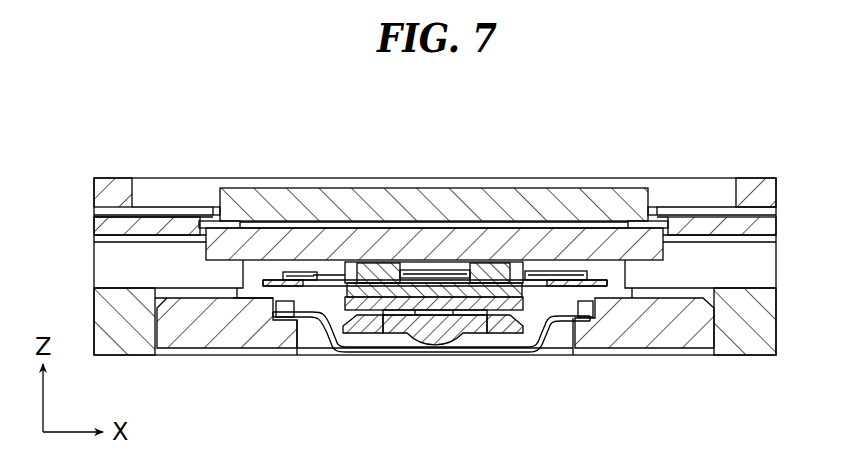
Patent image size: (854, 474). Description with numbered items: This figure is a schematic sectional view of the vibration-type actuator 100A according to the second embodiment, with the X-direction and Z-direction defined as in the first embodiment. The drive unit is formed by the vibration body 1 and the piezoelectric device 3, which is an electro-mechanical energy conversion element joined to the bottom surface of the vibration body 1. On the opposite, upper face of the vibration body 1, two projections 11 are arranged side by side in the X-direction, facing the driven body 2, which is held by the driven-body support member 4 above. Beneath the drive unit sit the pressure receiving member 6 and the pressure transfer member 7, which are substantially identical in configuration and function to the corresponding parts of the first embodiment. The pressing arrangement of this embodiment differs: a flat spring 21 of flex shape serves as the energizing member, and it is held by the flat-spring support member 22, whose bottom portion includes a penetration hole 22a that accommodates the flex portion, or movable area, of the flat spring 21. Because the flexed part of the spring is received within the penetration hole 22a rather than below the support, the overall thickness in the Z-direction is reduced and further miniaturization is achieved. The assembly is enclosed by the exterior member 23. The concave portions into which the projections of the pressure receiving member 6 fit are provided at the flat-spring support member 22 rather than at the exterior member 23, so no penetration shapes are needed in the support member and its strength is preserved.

The vibration-type actuator 100A is at (652, 119).
The vibration body 1 is at (439, 205).
The driven body 2 is at (348, 240).
The piezoelectric device 3 is at (488, 296).
The driven-body support member 4 is at (438, 205).
The pressure receiving member 6 is at (436, 333).
The pressure transfer member 7 is at (388, 303).
The projections 11 is at (380, 268).
The flat spring 21 is at (527, 350).
The flat-spring support member 22 is at (218, 338).
The penetration hole 22a is at (315, 340).
The exterior member 23 is at (766, 267).